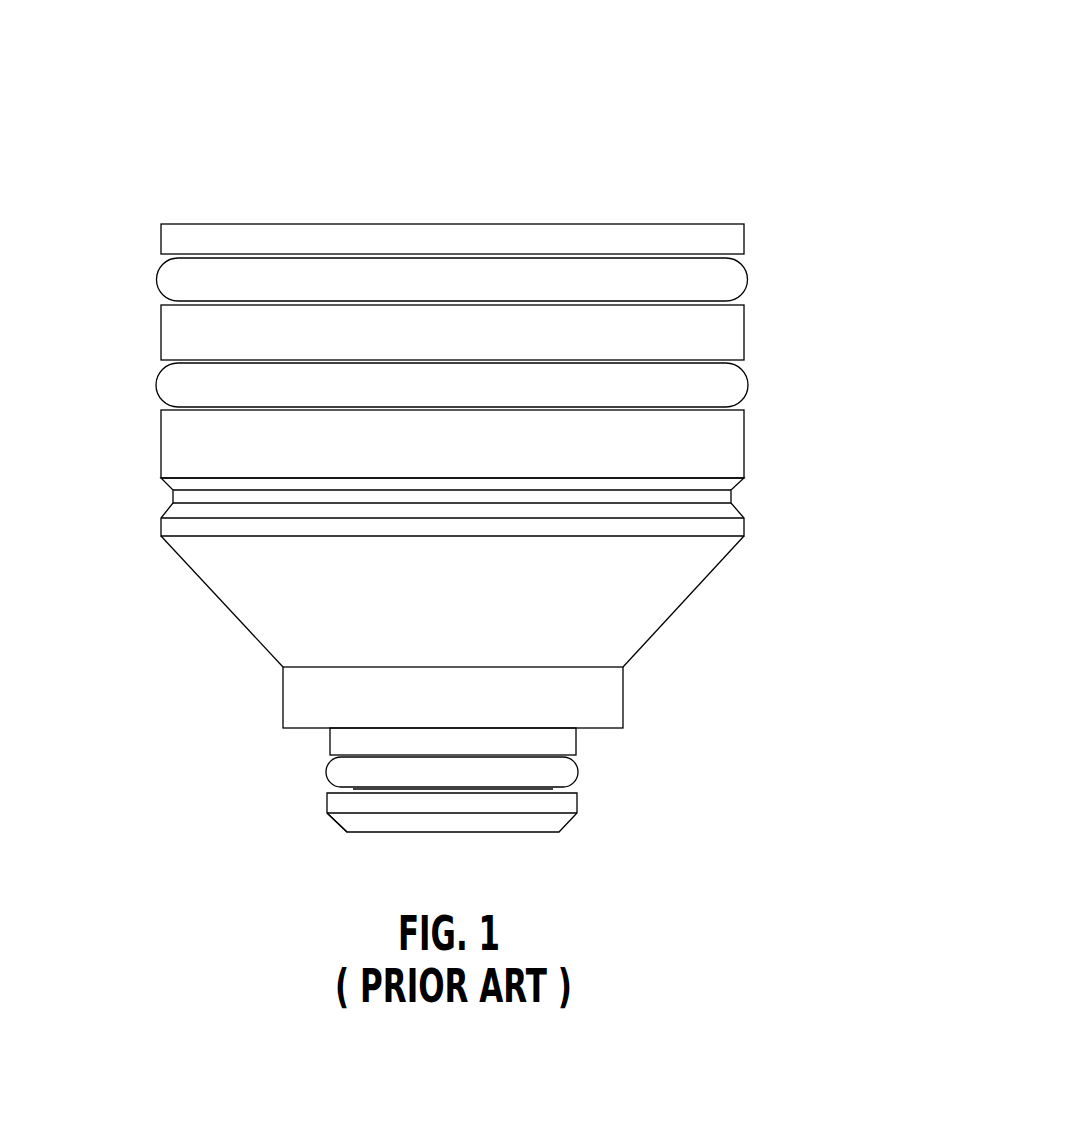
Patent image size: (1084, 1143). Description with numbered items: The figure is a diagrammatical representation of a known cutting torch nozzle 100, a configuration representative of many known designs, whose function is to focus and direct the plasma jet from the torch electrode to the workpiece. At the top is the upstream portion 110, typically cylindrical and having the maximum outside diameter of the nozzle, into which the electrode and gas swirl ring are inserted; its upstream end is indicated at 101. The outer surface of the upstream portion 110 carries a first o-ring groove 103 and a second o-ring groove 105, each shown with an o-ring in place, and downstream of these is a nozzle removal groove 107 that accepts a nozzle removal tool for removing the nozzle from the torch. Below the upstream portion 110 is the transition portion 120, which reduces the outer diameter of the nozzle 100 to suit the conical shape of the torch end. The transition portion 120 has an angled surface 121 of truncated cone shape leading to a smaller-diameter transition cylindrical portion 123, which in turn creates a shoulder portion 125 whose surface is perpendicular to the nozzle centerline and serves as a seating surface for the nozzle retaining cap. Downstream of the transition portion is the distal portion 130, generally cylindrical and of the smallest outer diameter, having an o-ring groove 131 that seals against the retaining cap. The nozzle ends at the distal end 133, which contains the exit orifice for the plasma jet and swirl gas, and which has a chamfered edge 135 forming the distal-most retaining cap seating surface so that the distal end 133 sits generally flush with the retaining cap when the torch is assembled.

The cutting torch nozzle 100 is at (602, 122).
The top plate / heat sink fin 101 is at (256, 224).
The first o-ring groove 103 is at (733, 283).
The second o-ring groove 105 is at (733, 390).
The nozzle removal groove 107 is at (731, 497).
The upstream portion 110 is at (117, 228).
The transition portion 120 is at (140, 544).
The angled surface 121 is at (700, 585).
The transition cylindrical portion 123 is at (623, 688).
The shoulder portion 125 is at (607, 728).
The distal portion 130 is at (187, 728).
The o-ring groove 131 is at (570, 772).
The distal end 133 is at (528, 832).
The chamfered edge 135 is at (342, 822).